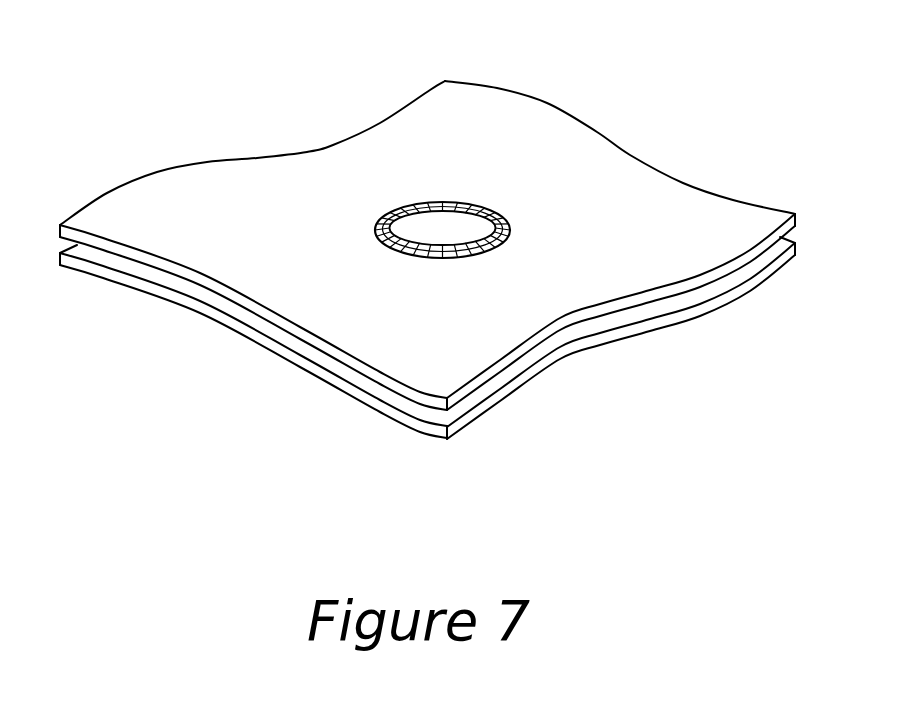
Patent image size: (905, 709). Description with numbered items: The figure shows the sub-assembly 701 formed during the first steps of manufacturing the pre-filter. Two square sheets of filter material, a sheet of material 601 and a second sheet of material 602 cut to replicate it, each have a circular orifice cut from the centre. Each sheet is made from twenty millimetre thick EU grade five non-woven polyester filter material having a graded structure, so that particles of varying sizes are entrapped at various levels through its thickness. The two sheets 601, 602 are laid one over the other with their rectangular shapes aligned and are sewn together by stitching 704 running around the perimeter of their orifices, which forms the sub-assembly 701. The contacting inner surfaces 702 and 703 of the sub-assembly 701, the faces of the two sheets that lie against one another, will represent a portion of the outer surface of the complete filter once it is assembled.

The sheet of material 601 is at (427, 249).
The second sheet of material 602 is at (427, 360).
The sub-assembly 701 is at (405, 256).
The contacting inner surface 702 is at (473, 383).
The contacting inner surface 703 is at (403, 410).
The stitching 704 is at (398, 208).